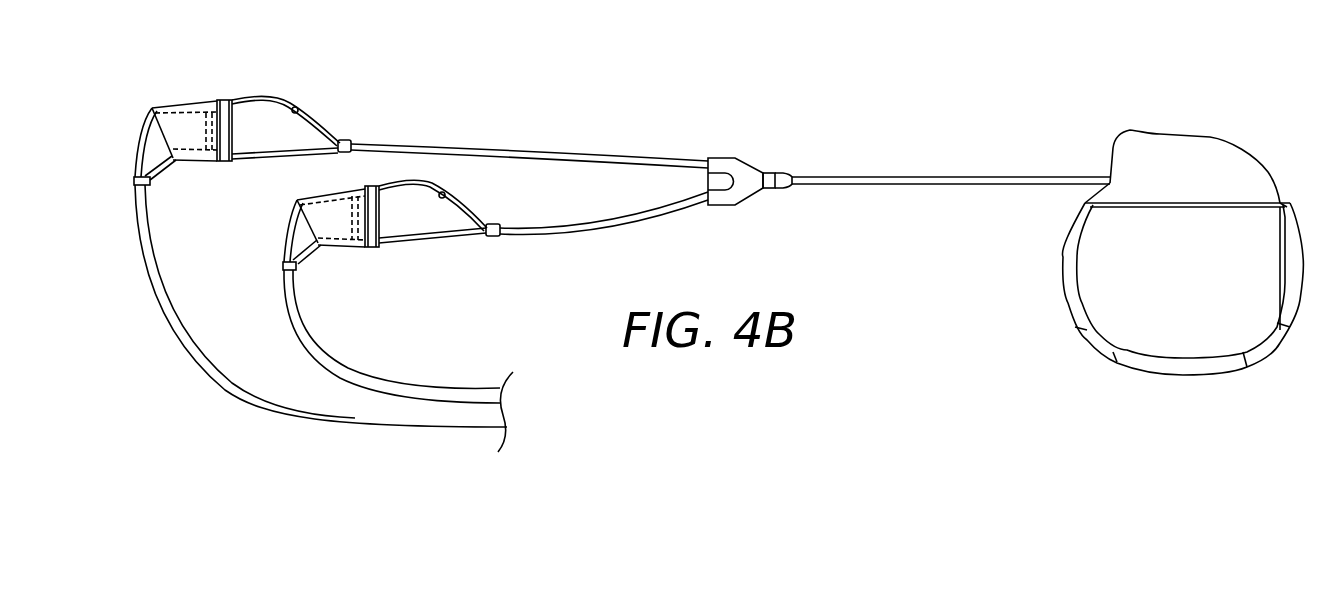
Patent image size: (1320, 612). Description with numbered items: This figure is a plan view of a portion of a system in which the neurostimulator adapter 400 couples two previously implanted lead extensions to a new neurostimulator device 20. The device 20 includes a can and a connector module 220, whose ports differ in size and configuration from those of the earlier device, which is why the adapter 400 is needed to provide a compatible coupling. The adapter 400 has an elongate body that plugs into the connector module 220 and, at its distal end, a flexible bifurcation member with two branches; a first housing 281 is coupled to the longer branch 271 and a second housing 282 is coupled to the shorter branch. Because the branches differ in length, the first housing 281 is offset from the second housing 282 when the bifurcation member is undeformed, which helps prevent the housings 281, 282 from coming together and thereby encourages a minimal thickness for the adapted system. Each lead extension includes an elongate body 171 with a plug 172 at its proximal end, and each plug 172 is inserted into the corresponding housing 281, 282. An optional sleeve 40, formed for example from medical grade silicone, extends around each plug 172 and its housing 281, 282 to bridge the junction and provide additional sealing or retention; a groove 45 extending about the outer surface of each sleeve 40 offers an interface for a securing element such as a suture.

The neurostimulator device 20 is at (1242, 124).
The connector module 220 is at (1168, 147).
The neurostimulator adapter 400 is at (822, 105).
The branch 271 is at (480, 145).
The first housing 281 is at (264, 88).
The second housing 282 is at (400, 252).
The sleeve 40 is at (198, 102).
The groove 45 is at (227, 135).
The elongate body 171 is at (182, 357).
The plug 172 is at (149, 107).